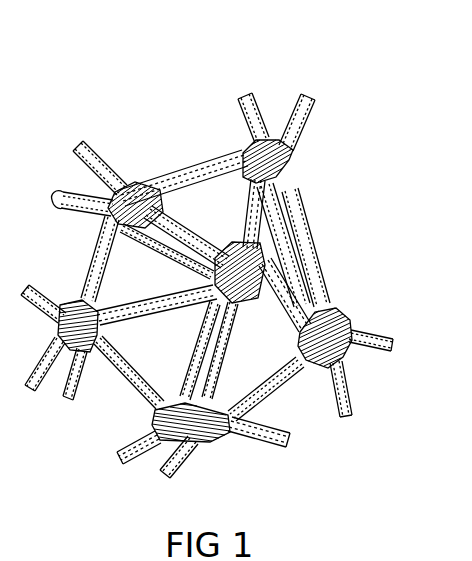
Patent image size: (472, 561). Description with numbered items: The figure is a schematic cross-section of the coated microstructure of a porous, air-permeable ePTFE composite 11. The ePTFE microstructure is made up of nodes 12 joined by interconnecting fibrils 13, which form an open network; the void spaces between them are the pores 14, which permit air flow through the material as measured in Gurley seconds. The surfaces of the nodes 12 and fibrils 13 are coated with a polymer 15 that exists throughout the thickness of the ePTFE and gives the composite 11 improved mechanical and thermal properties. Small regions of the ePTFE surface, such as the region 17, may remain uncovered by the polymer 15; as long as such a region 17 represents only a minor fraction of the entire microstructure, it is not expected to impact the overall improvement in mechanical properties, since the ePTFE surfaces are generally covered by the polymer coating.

The ePTFE composite 11 is at (207, 256).
The nodes 12 is at (337, 320).
The interconnecting fibrils 13 is at (187, 173).
The pores 14 is at (124, 270).
The polymer coating layer 15 is at (323, 277).
The uncoated region 17 is at (230, 358).